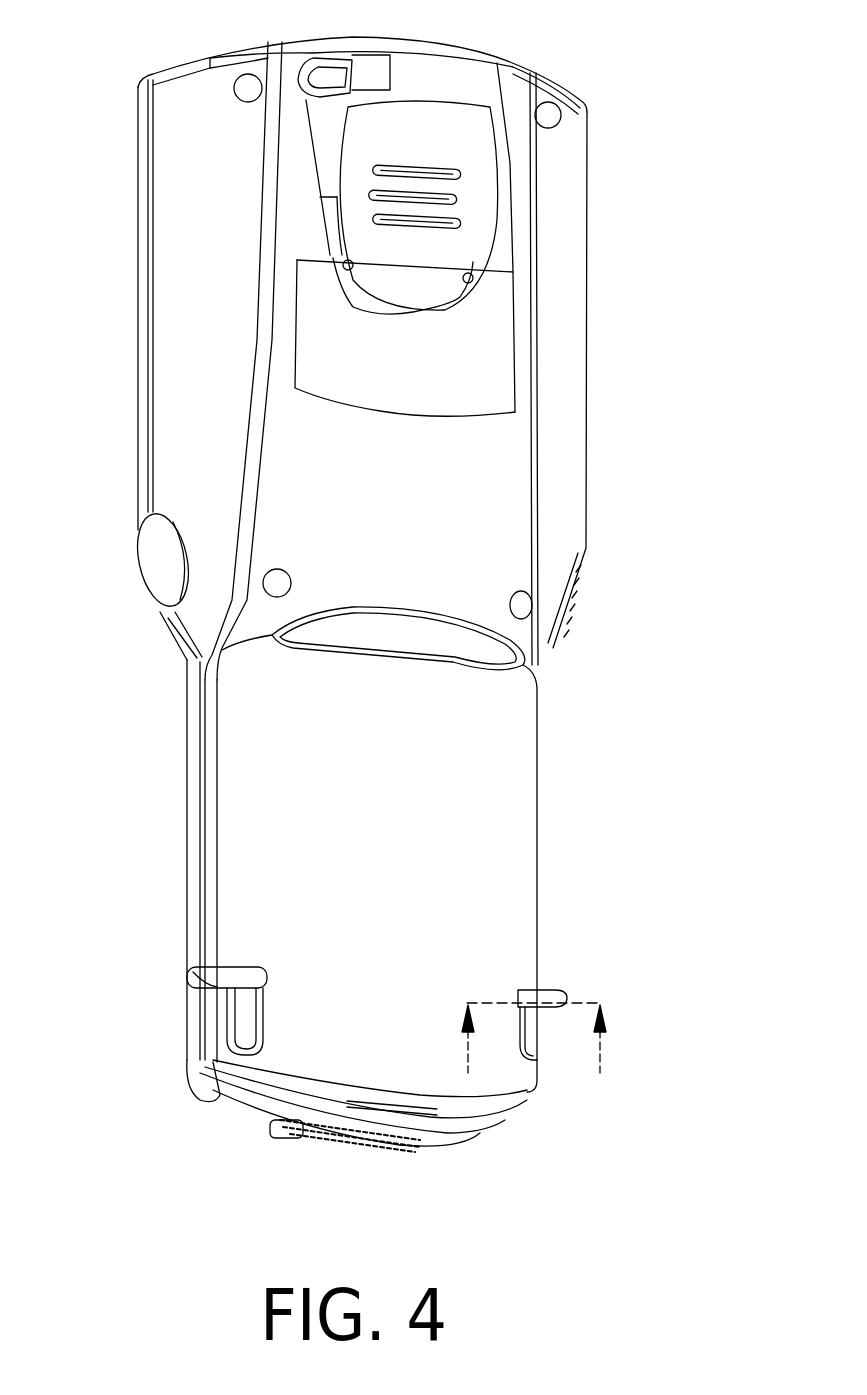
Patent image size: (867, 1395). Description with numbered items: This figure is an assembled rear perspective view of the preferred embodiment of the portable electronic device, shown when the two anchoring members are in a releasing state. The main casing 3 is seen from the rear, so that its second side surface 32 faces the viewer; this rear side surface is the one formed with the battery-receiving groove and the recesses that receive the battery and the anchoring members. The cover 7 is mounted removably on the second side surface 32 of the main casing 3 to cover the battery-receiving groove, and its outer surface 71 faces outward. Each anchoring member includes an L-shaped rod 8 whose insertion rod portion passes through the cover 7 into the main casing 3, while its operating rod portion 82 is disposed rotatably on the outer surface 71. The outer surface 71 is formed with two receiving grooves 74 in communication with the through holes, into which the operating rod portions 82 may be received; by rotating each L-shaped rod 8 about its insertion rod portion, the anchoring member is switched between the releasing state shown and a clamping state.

The main casing 3 is at (427, 358).
The second side surface 32 is at (487, 480).
The cover 7 is at (387, 895).
The outer surface 71 is at (510, 737).
The L-shaped rod 8 is at (387, 1026).
The operating rod portion 82 is at (190, 987).
The receiving groove 74 is at (230, 1040).